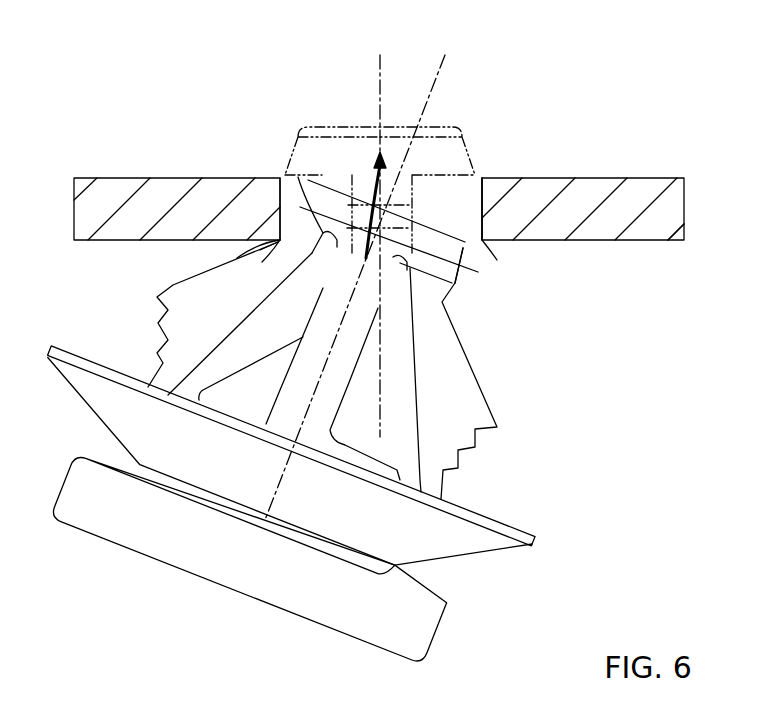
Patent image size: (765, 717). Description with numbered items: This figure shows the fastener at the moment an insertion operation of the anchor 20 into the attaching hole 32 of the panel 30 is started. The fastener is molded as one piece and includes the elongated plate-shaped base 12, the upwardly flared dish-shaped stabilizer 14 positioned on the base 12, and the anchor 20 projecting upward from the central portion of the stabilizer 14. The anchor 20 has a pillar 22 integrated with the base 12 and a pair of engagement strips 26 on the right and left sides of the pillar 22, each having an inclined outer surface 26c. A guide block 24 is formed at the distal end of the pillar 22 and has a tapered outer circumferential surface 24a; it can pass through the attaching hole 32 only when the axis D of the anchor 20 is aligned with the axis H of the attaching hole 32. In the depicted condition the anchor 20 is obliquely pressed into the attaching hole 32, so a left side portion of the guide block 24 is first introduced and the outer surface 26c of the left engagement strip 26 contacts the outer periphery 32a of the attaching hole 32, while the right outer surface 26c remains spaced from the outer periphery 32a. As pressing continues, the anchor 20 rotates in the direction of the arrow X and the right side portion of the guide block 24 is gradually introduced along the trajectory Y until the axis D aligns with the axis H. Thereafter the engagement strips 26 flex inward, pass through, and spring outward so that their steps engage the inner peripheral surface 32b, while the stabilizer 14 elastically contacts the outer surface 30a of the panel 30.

The base 12 is at (233, 562).
The stabilizer 14 is at (92, 360).
The anchor 20 is at (292, 397).
The pillar 22 is at (327, 380).
The guide block 24 is at (433, 175).
The tapered outer circumferential surface 24a is at (298, 177).
The engagement strips 26 is at (207, 302).
The inclined outer surfaces 26c is at (204, 270).
The panel 30 is at (578, 200).
The outer surface 30a is at (650, 243).
The attaching hole 32 is at (500, 177).
The outer periphery 32a is at (272, 255).
The inner peripheral surface 32b is at (500, 178).
The axis of the attaching hole H is at (383, 90).
The axis of the anchor D is at (437, 82).
The arrow X is at (368, 175).
The trajectory Y is at (463, 247).